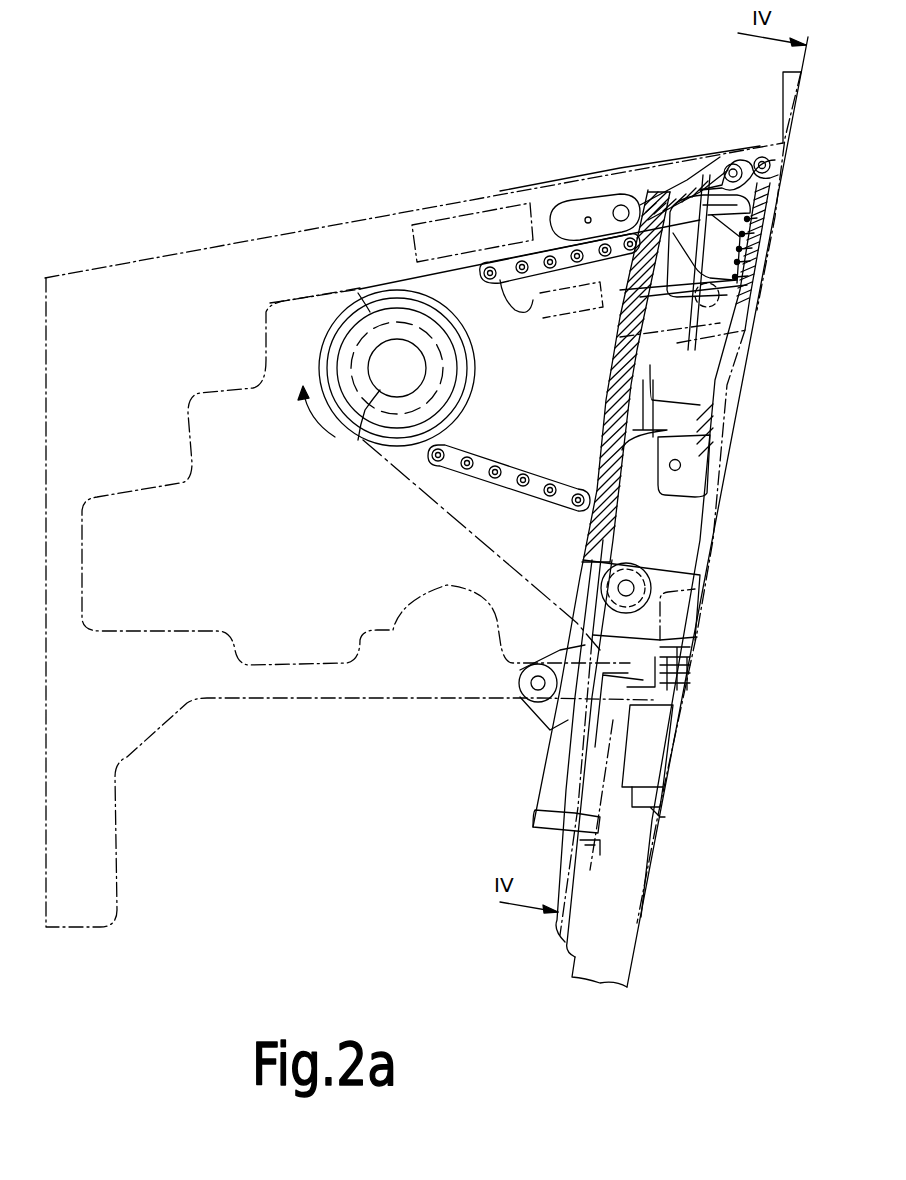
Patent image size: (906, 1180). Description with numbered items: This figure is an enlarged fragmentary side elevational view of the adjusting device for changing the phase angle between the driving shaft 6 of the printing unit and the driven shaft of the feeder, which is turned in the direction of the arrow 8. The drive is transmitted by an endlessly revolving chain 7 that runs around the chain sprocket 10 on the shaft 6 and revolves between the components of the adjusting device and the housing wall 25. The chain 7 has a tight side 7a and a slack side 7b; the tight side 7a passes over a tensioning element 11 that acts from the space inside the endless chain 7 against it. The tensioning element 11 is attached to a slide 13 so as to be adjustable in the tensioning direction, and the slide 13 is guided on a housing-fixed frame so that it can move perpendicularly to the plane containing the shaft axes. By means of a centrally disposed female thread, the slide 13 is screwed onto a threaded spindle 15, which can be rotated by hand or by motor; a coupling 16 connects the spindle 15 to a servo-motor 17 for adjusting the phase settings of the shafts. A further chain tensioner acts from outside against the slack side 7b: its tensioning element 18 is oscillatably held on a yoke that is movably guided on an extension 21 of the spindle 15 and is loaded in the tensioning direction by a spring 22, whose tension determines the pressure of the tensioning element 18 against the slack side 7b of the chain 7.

The shaft 6 is at (365, 445).
The chain 7 is at (468, 282).
The tight side 7a is at (475, 450).
The slack side 7b is at (527, 318).
The arrow 8 is at (298, 428).
The chain sprocket 10 is at (370, 312).
The tensioning element 11 is at (600, 530).
The slide 13 is at (605, 448).
The threaded spindle 15 is at (688, 535).
The coupling 16 is at (620, 750).
The servo-motor 17 is at (557, 868).
The tensioning element 18 is at (563, 213).
The extension 21 is at (672, 303).
The spring 22 is at (710, 207).
The housing wall 25 is at (147, 723).